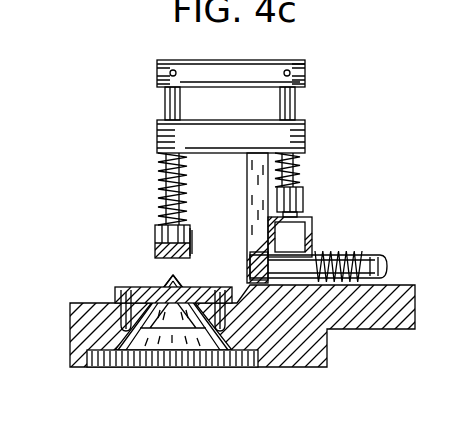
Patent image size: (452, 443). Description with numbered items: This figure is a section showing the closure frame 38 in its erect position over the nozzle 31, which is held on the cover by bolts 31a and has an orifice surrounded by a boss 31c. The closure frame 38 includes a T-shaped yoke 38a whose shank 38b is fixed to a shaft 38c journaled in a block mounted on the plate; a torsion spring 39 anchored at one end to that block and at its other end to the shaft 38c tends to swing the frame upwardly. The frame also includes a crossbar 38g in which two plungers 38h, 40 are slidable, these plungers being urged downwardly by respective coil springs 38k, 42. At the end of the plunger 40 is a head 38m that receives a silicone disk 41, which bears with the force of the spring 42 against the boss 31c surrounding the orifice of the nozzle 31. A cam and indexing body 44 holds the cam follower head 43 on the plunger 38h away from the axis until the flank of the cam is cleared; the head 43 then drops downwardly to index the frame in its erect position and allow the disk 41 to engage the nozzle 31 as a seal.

The closure frame 38 is at (228, 72).
The crossbar 38g is at (306, 72).
The plunger 38h is at (302, 100).
The T-shaped yoke 38a is at (305, 120).
The coil spring 38k is at (303, 160).
The shank 38b is at (247, 196).
The head 38m is at (192, 236).
The shaft 38c is at (288, 283).
The plunger 40 is at (172, 102).
The coil spring 42 is at (160, 182).
The silicone disk 41 is at (155, 243).
The cam follower head 43 is at (303, 196).
The cam and indexing body 44 is at (315, 220).
The torsion spring 39 is at (350, 252).
The nozzle 31 is at (168, 290).
The boss 31c is at (190, 296).
The bolt 31a is at (123, 313).